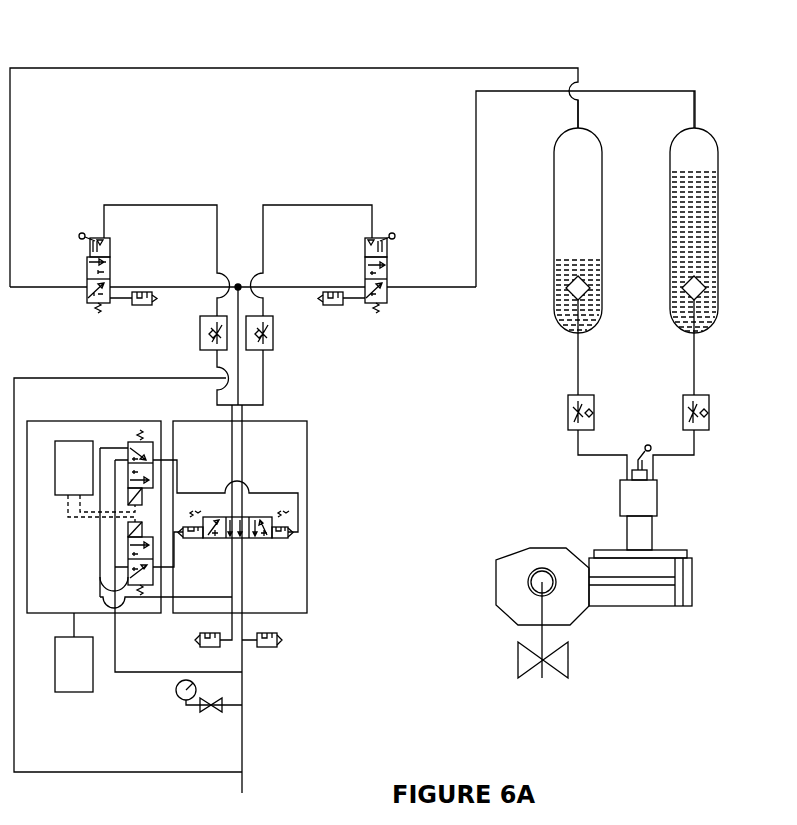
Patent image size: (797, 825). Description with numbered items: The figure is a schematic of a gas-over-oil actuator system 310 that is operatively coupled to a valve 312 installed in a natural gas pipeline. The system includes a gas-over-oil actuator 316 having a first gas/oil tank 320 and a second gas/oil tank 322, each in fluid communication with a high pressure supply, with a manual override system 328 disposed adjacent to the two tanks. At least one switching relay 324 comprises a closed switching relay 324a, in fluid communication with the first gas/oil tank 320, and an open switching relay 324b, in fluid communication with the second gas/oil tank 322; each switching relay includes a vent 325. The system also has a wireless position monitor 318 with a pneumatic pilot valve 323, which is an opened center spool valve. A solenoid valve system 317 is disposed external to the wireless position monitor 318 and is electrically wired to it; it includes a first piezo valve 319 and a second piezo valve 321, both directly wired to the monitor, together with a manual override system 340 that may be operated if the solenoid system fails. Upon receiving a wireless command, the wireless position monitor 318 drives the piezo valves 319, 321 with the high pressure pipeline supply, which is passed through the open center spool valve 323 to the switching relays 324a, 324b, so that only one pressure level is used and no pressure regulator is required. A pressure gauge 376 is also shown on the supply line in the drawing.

The gas-over-oil actuator system 310 is at (127, 47).
The valve 312 is at (568, 660).
The gas-over-oil actuator 316 is at (742, 217).
The solenoid valve system 317 is at (51, 408).
The wireless position monitor 318 is at (328, 547).
The first piezo valve 319 is at (144, 456).
The first gas/oil tank 320 is at (719, 164).
The second piezo valve 321 is at (148, 590).
The second gas/oil tank 322 is at (553, 164).
The pneumatic pilot valve 323 is at (260, 516).
The switching relay 324 is at (367, 326).
The closed switching relay 324a is at (388, 270).
The open switching relay 324b is at (86, 272).
The vent 325 is at (141, 306).
The manual override system 328 is at (662, 494).
The manual override system 340 is at (54, 685).
The pressure gauge 376 is at (176, 686).